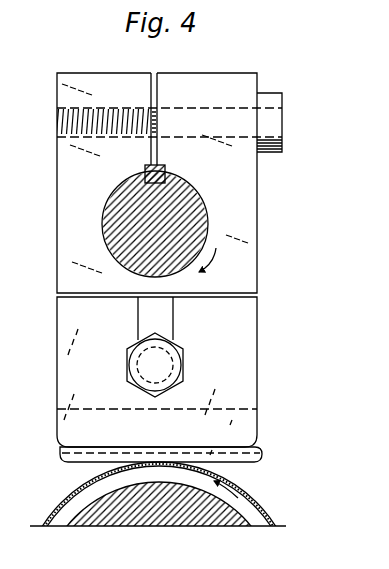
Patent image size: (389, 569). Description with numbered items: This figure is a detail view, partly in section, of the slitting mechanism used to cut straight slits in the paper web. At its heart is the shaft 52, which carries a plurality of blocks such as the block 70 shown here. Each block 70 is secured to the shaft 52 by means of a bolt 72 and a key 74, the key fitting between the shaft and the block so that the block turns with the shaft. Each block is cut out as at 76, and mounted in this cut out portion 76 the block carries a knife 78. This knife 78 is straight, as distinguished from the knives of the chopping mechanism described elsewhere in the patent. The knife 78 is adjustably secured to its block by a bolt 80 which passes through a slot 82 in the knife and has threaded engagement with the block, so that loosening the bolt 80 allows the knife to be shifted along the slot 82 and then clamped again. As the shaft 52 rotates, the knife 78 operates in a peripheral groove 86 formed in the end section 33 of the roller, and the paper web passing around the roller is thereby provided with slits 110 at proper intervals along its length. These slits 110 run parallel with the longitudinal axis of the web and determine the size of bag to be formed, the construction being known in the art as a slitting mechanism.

The block 70 is at (248, 238).
The bolt 72 is at (275, 118).
The key 74 is at (165, 172).
The shaft 52 is at (197, 205).
The cut out portion 76 is at (236, 296).
The slot 82 is at (176, 322).
The bolt 80 is at (185, 365).
The knife 78 is at (258, 452).
The slits 110 is at (78, 478).
The end sections 33 is at (101, 527).
The peripheral grooves 86 is at (246, 502).